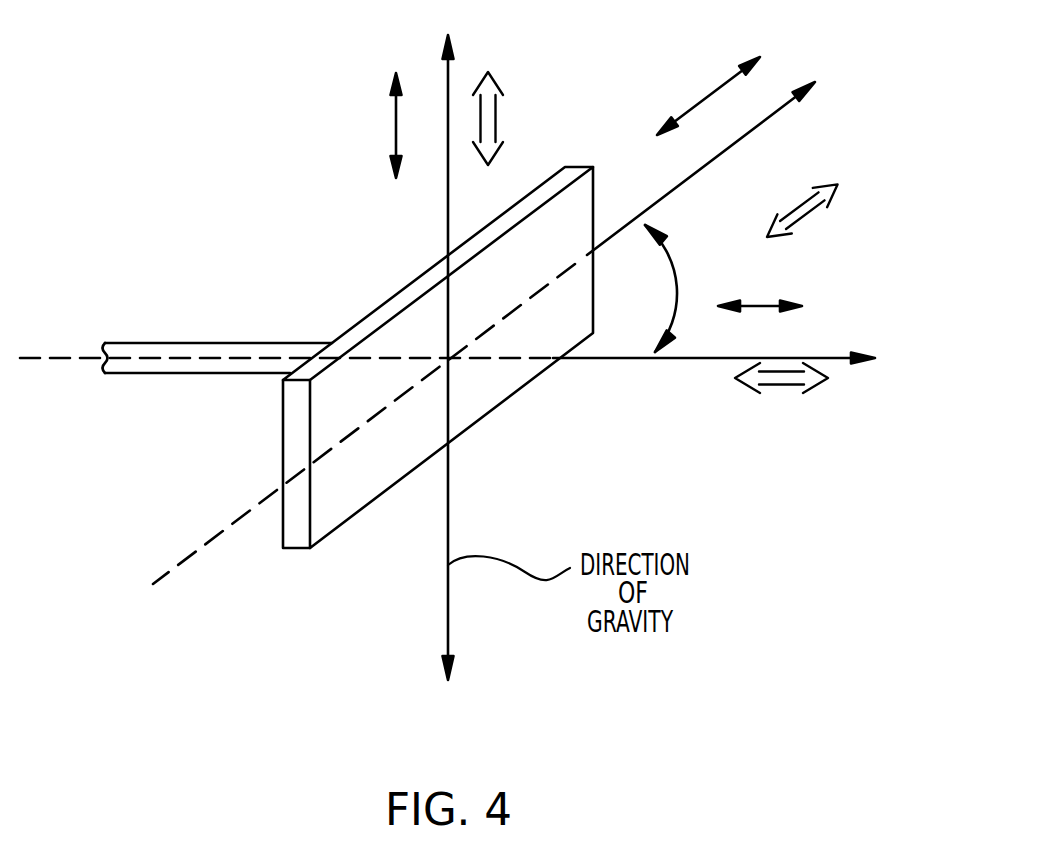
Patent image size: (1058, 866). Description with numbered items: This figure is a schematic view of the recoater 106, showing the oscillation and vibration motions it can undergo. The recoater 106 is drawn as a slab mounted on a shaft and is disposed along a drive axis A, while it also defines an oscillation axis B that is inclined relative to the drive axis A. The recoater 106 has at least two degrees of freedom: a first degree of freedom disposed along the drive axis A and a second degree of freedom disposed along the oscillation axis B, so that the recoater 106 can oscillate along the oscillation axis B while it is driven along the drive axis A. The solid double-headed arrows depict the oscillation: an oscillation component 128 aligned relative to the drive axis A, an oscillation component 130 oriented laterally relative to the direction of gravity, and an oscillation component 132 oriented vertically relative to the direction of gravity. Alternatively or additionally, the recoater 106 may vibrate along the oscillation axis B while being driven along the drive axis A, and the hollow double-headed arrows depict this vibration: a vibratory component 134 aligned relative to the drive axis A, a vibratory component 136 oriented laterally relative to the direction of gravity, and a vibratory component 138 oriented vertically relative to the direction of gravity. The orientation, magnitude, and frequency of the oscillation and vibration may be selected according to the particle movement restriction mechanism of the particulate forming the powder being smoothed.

The recoater 106 is at (298, 535).
The oscillation component 128 is at (763, 303).
The oscillation component 130 is at (705, 95).
The oscillation component 132 is at (396, 127).
The vibratory component 134 is at (782, 385).
The vibratory component 136 is at (810, 218).
The vibratory component 138 is at (497, 118).
The drive axis A is at (682, 358).
The oscillation axis B is at (737, 145).